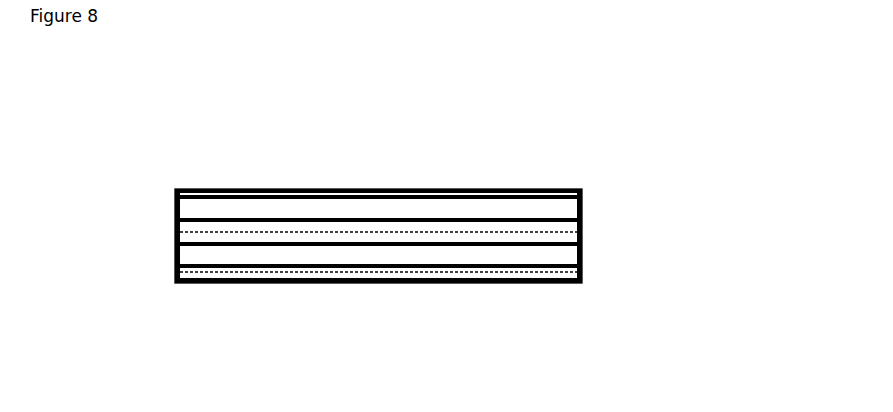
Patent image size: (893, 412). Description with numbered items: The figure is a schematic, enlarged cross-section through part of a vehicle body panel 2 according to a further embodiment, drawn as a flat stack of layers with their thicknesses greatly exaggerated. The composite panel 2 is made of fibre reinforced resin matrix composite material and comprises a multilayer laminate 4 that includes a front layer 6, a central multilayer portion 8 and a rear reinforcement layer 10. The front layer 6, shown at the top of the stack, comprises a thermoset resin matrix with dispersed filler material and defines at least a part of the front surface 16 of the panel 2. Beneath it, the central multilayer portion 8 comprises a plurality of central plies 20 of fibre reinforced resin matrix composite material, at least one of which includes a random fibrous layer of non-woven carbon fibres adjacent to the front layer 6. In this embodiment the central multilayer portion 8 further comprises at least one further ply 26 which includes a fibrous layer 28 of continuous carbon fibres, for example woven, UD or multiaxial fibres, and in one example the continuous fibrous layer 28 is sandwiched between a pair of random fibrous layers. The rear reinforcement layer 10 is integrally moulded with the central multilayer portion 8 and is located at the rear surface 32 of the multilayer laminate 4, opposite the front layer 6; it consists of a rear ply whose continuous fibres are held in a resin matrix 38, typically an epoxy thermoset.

The front layer 6 is at (378, 184).
The front surface 16 is at (265, 190).
The central plies 20 is at (385, 207).
The composite panel 2 is at (205, 226).
The fibrous layer of continuous carbon fibres 28 is at (230, 230).
The further ply 26 is at (279, 238).
The rear surface 32 is at (222, 268).
The rear reinforcement layer 10 is at (306, 273).
The resin matrix 38 is at (482, 270).
The multilayer laminate 4 is at (578, 230).
The central multilayer portion 8 is at (572, 255).